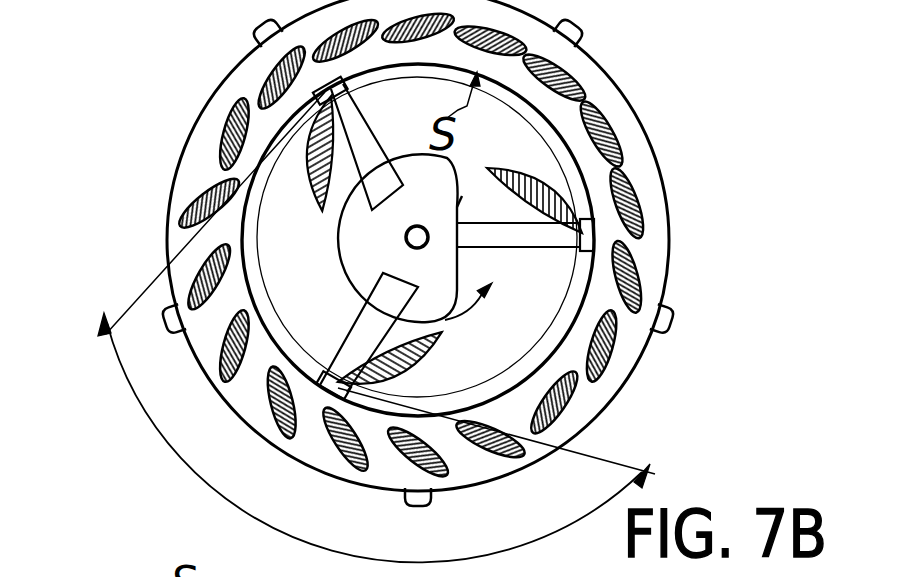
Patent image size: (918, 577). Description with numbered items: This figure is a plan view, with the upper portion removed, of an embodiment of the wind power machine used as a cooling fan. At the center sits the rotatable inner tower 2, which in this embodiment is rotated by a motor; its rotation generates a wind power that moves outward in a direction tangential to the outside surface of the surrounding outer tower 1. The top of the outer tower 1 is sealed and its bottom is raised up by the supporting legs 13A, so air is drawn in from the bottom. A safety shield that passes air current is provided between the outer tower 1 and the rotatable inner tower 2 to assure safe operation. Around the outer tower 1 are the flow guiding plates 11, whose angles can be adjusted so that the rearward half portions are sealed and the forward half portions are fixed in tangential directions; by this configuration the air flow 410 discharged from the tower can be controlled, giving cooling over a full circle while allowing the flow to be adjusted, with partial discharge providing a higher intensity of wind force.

The outer tower 1 is at (159, 188).
The inner tower 2 is at (547, 177).
The flow guiding plates 11 is at (632, 272).
The supporting legs 13A is at (668, 317).
The air flow 410 is at (376, 327).